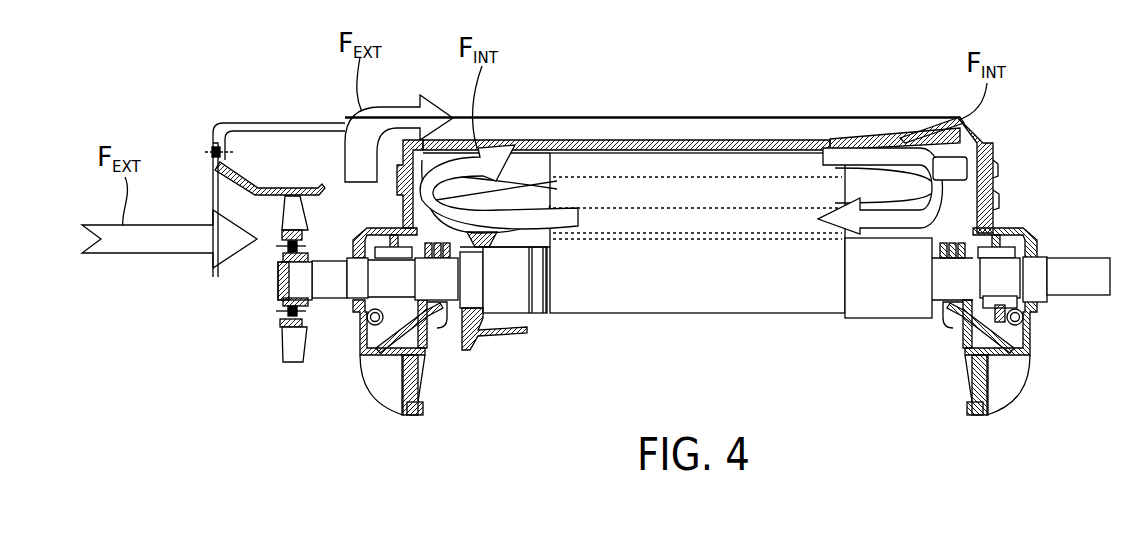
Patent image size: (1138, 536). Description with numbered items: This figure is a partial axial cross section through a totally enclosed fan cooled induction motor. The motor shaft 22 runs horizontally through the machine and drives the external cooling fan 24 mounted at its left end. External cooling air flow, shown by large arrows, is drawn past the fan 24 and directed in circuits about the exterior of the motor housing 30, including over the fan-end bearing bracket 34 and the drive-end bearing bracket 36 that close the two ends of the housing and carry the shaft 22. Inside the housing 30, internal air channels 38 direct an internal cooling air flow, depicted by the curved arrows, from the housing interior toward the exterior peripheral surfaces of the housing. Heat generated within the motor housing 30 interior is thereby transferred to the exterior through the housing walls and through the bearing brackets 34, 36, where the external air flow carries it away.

The motor shaft 22 is at (327, 282).
The external cooling fan 24 is at (292, 343).
The motor housing 30 is at (797, 86).
The fan-end bearing bracket 34 is at (346, 168).
The drive-end bearing bracket 36 is at (997, 160).
The internal air channels 38 is at (533, 141).